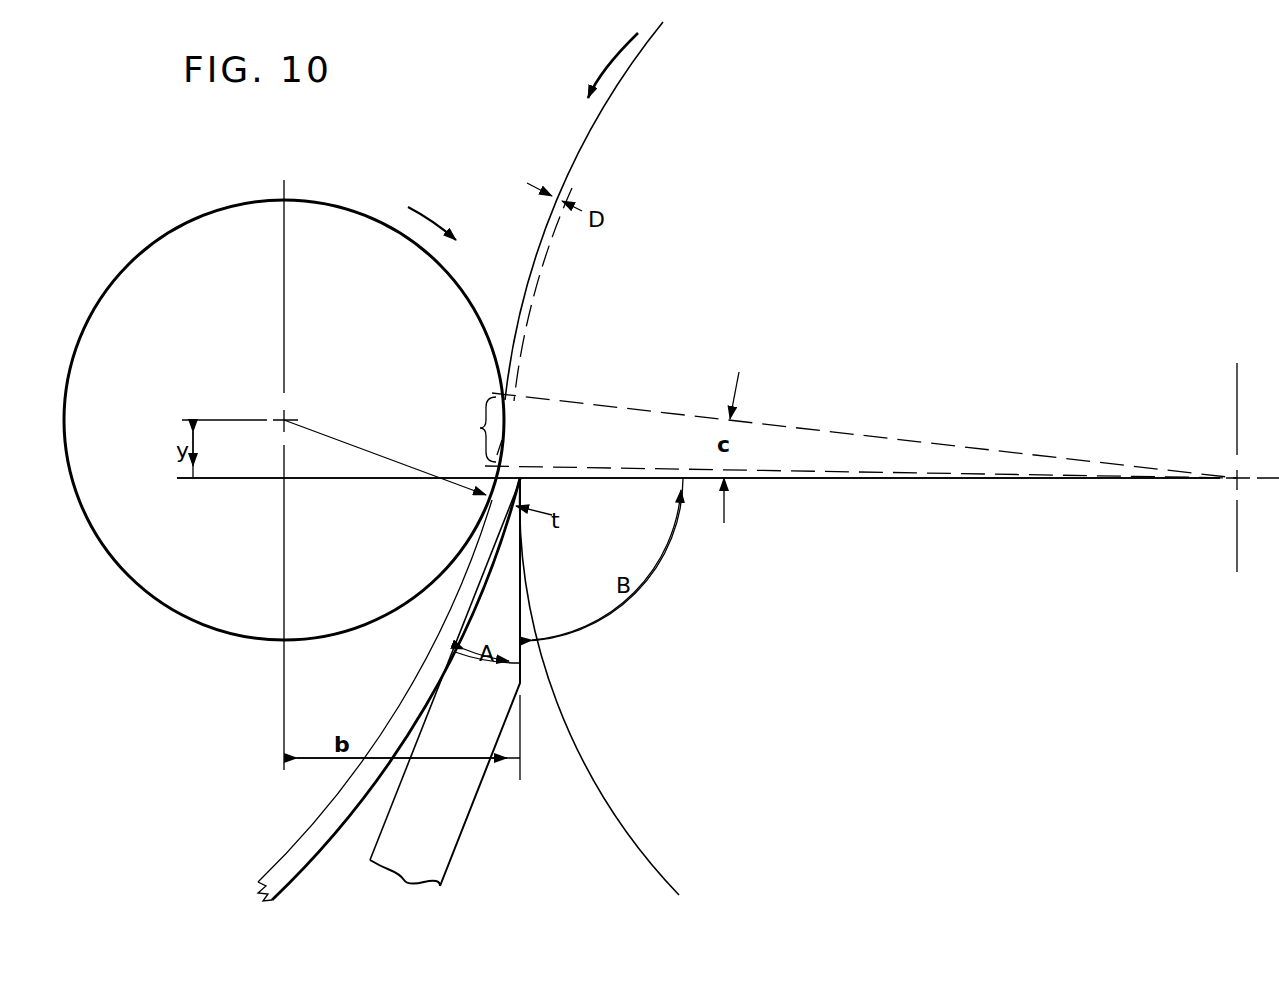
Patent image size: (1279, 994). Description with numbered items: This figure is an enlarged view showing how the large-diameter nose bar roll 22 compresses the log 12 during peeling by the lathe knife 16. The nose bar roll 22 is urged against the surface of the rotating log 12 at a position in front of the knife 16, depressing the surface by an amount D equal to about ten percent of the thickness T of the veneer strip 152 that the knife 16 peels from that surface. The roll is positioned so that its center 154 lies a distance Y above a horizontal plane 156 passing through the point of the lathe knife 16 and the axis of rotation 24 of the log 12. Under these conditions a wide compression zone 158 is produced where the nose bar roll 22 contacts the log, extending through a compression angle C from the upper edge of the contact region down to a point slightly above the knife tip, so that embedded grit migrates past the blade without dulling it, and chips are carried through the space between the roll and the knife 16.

The log 12 is at (577, 152).
The lathe knife 16 is at (452, 815).
The nose bar roll 22 is at (352, 204).
The axis of rotation 24 is at (1238, 478).
The veneer strip 152 is at (448, 612).
The center 154 is at (290, 416).
The horizontal plane 156 is at (240, 478).
The compression zone 158 is at (480, 428).